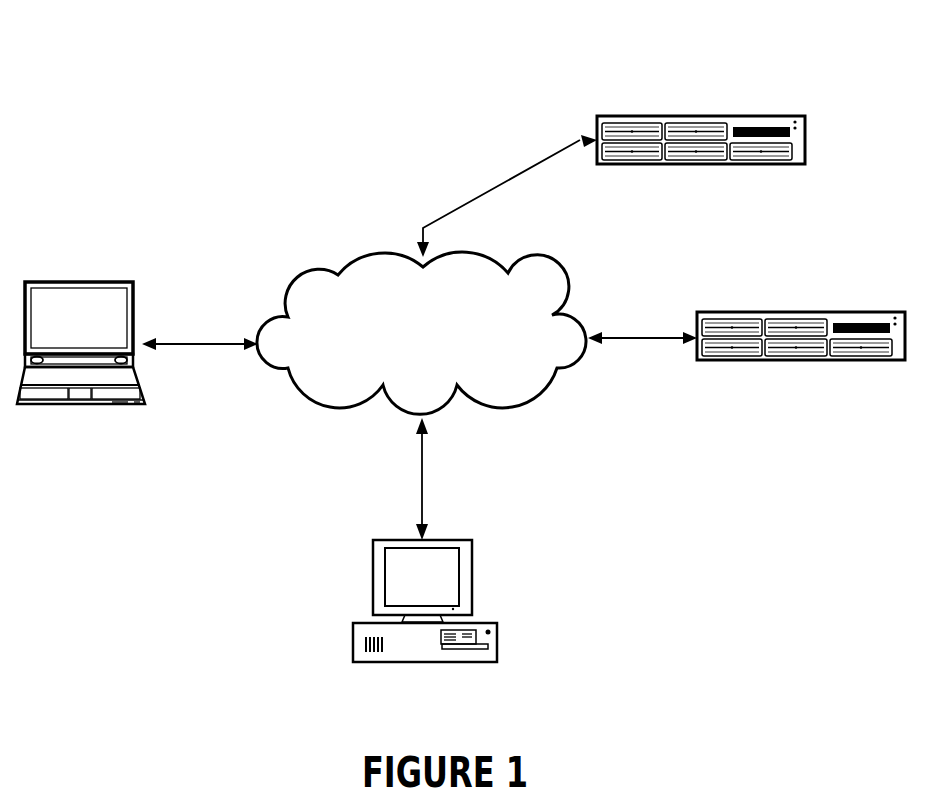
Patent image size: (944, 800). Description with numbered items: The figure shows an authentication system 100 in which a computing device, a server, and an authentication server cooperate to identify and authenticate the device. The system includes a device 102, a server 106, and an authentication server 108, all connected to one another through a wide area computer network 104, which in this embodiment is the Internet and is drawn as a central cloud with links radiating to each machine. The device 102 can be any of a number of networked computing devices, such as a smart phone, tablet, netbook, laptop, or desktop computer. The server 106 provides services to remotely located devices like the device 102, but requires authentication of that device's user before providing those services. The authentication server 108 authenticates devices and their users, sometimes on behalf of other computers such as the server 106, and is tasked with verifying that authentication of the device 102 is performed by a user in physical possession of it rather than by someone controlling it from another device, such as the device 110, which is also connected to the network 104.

The authentication system 100 is at (277, 90).
The device 102 is at (79, 282).
The wide area computer network 104 is at (421, 333).
The server 106 is at (700, 116).
The authentication server 108 is at (800, 312).
The device 110 is at (425, 662).